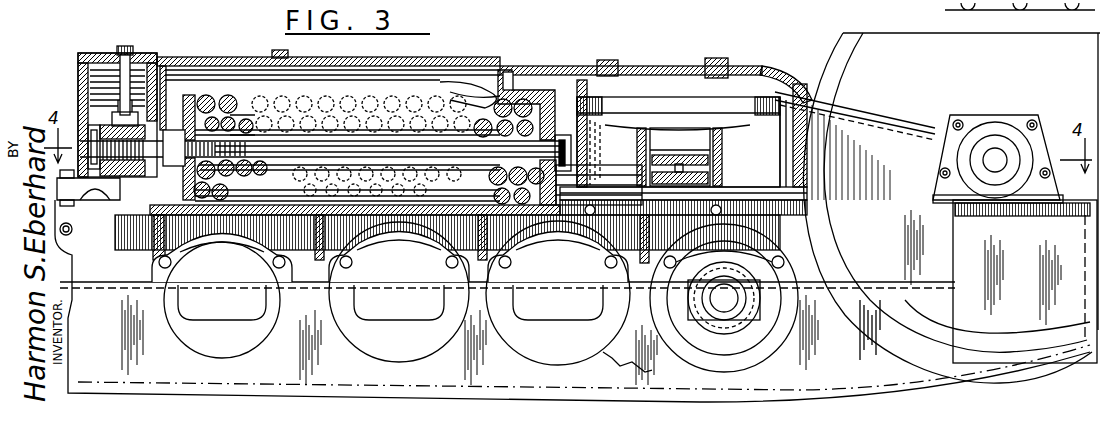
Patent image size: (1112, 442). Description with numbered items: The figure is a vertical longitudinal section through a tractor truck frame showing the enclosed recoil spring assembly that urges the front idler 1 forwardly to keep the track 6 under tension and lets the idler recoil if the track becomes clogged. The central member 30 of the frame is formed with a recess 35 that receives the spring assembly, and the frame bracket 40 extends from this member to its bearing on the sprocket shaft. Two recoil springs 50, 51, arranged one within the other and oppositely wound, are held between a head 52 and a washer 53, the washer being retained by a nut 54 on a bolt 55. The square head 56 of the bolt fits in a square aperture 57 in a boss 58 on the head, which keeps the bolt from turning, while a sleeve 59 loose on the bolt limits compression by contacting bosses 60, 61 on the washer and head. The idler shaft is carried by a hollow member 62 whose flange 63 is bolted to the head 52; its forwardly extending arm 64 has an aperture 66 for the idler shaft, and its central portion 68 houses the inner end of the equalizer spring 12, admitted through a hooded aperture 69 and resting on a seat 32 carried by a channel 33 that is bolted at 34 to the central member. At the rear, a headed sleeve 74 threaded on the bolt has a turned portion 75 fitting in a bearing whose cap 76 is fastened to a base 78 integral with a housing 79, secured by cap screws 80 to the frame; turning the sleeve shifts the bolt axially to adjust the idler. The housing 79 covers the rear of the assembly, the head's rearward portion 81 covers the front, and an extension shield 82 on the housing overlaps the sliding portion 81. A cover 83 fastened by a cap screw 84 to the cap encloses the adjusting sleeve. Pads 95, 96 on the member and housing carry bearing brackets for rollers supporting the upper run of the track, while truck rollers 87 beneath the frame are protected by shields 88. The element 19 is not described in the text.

The idler 1 is at (852, 50).
The track 6 is at (431, 390).
The equalizer spring 12 is at (700, 136).
The side panel 19 is at (896, 286).
The central member 30 is at (760, 242).
The seat 32 is at (700, 166).
The channel 33 is at (706, 156).
The bolt 34 is at (706, 182).
The recess 35 is at (598, 208).
The bracket 40 is at (262, 272).
The recoil spring 50 is at (228, 103).
The recoil spring 51 is at (248, 122).
The head 52 is at (588, 105).
The washer 53 is at (190, 95).
The nut 54 is at (170, 130).
The bolt 55 is at (422, 245).
The square head 56 is at (570, 150).
The square aperture 57 is at (566, 165).
The boss 58 is at (582, 192).
The sleeve 59 is at (507, 72).
The boss 60 is at (208, 96).
The boss 61 is at (583, 118).
The member 62 is at (777, 70).
The flange 63 is at (535, 66).
The arm 64 is at (935, 125).
The aperture 66 is at (997, 150).
The central portion 68 is at (714, 58).
The hooded aperture 69 is at (812, 130).
The sleeve 74 is at (93, 140).
The turned central portion 75 is at (106, 132).
The cap 76 is at (140, 105).
The base 78 is at (135, 215).
The housing 79 is at (203, 95).
The cap screw 80 is at (262, 250).
The portion 81 is at (480, 96).
The extension shield 82 is at (445, 78).
The cover 83 is at (118, 126).
The cap screw 84 is at (125, 46).
The truck roller 87 is at (652, 372).
The shield 88 is at (870, 371).
The pad 95 is at (608, 60).
The pad 96 is at (278, 51).